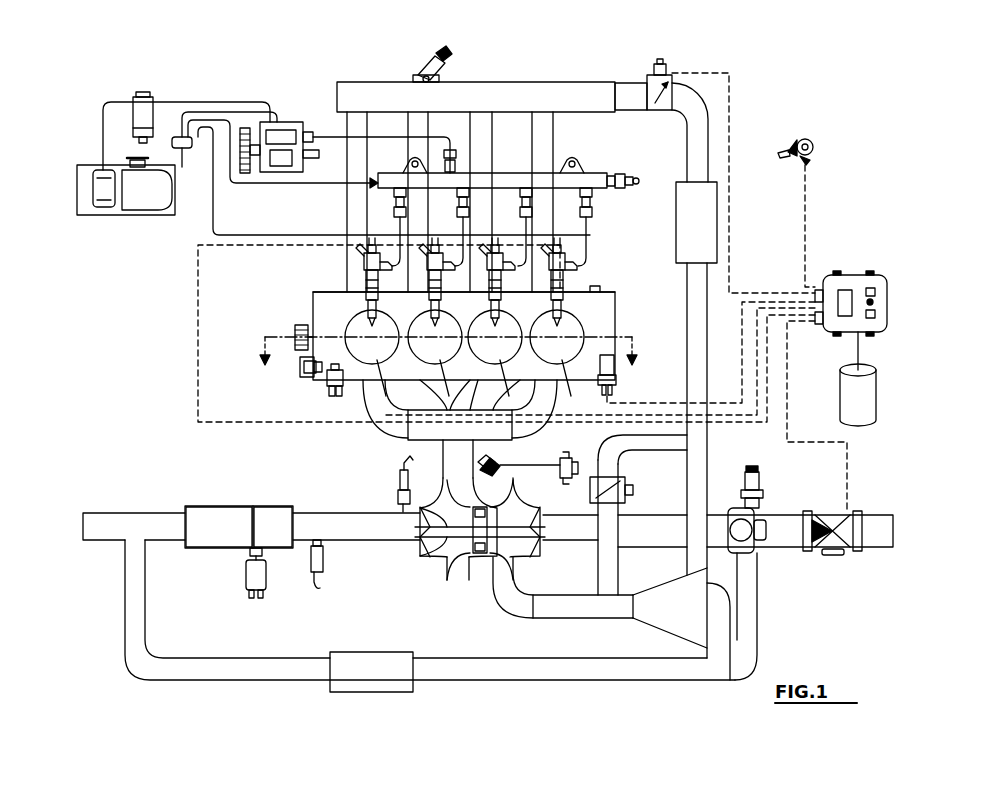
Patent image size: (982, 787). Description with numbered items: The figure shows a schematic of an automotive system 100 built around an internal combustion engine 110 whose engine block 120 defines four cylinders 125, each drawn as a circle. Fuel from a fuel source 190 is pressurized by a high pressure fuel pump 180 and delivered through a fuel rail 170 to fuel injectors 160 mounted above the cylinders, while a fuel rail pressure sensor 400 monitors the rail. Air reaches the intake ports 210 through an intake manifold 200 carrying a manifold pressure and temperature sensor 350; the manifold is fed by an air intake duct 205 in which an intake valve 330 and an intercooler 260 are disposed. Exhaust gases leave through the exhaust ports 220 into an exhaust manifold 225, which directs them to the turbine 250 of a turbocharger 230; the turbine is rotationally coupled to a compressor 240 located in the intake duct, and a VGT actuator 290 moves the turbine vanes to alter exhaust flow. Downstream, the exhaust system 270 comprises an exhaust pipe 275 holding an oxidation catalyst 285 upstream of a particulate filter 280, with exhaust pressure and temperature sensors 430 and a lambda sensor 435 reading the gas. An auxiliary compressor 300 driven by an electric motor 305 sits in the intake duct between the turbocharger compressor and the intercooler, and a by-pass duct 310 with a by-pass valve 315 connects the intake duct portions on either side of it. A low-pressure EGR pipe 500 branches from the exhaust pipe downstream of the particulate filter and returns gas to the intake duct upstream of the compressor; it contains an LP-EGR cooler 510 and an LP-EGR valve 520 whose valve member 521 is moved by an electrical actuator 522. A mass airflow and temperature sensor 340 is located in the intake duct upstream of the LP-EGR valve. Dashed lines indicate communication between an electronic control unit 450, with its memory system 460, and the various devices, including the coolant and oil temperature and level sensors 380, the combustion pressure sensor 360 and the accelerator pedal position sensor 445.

The automotive system 100 is at (252, 66).
The internal combustion engine 110 is at (573, 66).
The engine block 120 is at (313, 298).
The cylinder 125 is at (582, 312).
The fuel injector 160 is at (372, 275).
The fuel rail 170 is at (382, 180).
The high pressure fuel pump 180 is at (292, 122).
The fuel source 190 is at (148, 200).
The intake manifold 200 is at (483, 97).
The air intake duct 205 is at (695, 350).
The intake port 210 is at (360, 295).
The exhaust port 220 is at (380, 408).
The exhaust manifold 225 is at (430, 455).
The turbocharger 230 is at (448, 595).
The compressor 240 is at (508, 556).
The turbine 250 is at (452, 552).
The intercooler 260 is at (700, 215).
The exhaust system 270 is at (218, 496).
The exhaust pipe 275 is at (117, 528).
The particulate filter 280 is at (197, 550).
The oxidation catalyst 285 is at (270, 520).
The VGT actuator 290 is at (503, 468).
The auxiliary compressor 300 is at (680, 607).
The electric motor 305 is at (722, 640).
The by-pass duct 310 is at (608, 568).
The by-pass valve 315 is at (633, 488).
The intake valve 330 is at (660, 63).
The mass airflow and temperature sensor 340 is at (845, 551).
The manifold pressure and temperature sensor 350 is at (427, 66).
The combustion pressure sensor 360 is at (433, 432).
The coolant and oil temperature and level sensors 380 is at (328, 383).
The fuel rail pressure sensor 400 is at (638, 176).
The exhaust pressure and temperature sensors 430 is at (317, 584).
The lambda sensor 435 is at (403, 516).
The accelerator pedal position sensor 445 is at (808, 139).
The electronic control unit 450 is at (858, 275).
The memory system 460 is at (858, 407).
The LP-EGR pipe 500 is at (237, 682).
The LP-EGR cooler 510 is at (385, 695).
The LP-EGR valve 520 is at (757, 572).
The valve member 521 is at (763, 540).
The electrical actuator 522 is at (760, 490).